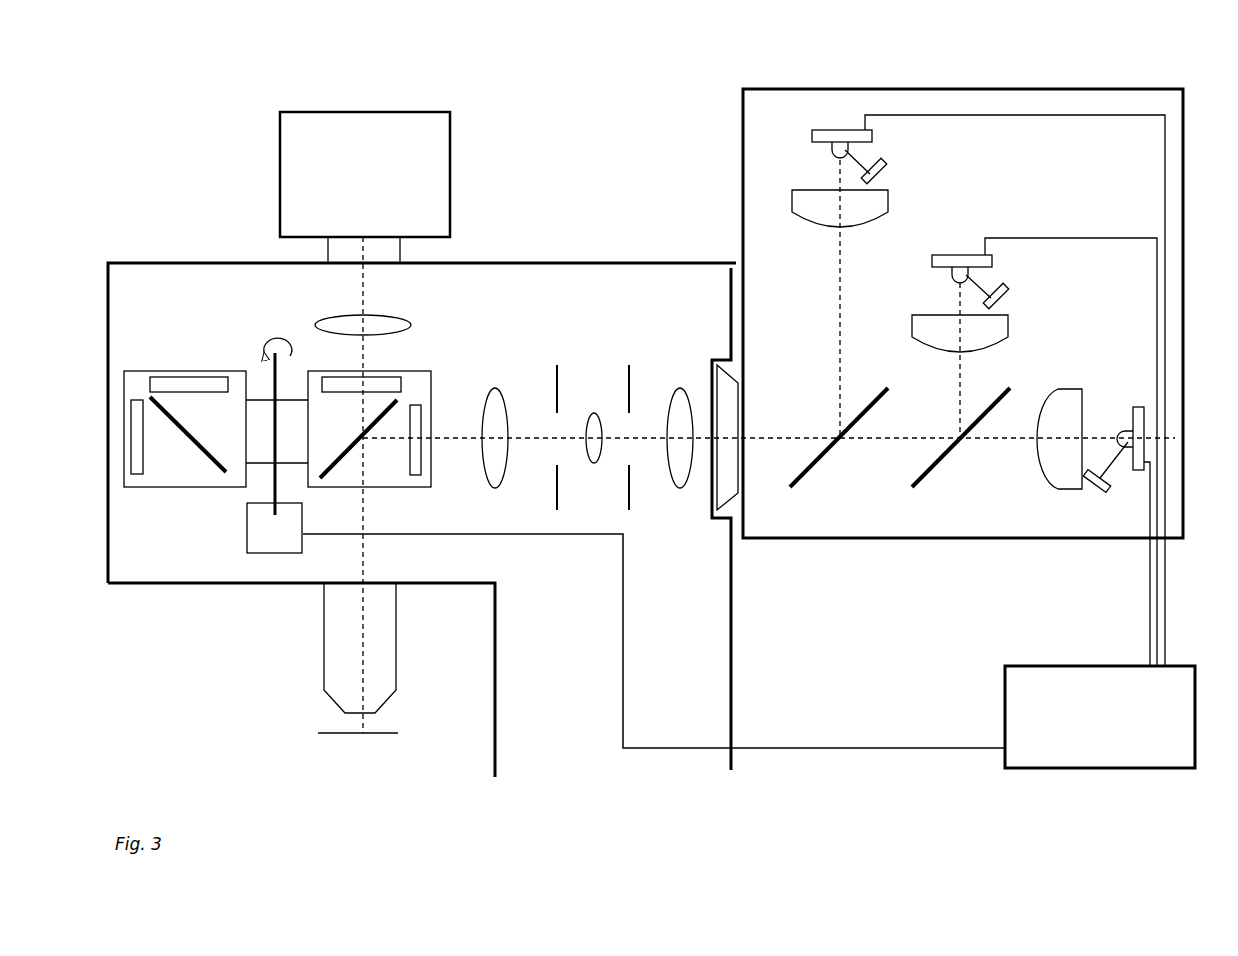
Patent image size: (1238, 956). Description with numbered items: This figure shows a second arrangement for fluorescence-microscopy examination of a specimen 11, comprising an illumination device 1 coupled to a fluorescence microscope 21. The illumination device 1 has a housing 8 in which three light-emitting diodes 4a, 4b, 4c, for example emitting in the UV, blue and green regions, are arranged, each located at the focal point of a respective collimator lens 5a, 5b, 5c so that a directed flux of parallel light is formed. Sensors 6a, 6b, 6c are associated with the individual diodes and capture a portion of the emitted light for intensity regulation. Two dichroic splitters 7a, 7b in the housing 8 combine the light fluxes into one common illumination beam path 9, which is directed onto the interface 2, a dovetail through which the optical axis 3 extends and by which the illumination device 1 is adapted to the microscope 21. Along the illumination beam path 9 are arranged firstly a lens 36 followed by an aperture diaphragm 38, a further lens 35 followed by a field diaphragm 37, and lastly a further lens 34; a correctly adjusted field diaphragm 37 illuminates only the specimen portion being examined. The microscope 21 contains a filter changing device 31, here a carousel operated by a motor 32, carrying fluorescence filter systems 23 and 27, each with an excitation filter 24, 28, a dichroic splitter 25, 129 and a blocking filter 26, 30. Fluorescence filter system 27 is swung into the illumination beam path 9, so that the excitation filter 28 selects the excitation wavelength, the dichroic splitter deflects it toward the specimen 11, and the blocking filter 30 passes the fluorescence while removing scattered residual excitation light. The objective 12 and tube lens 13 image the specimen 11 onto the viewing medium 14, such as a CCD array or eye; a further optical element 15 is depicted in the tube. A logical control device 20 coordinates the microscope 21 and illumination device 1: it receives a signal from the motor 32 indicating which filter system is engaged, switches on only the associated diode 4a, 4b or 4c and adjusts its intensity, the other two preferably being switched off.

The illumination device 1 is at (768, 84).
The interface 2 is at (750, 530).
The optical axis 3 is at (893, 440).
The light-emitting diode 4a is at (830, 130).
The light-emitting diode 4b is at (950, 255).
The light-emitting diode 4c is at (1138, 475).
The collimator lens 5a is at (880, 205).
The collimator lens 5b is at (1000, 328).
The collimator lens 5c is at (1065, 485).
The sensor 6a is at (880, 165).
The sensor 6b is at (1000, 290).
The sensor 6c is at (1105, 492).
The dichroic splitter 7a is at (800, 490).
The dichroic splitter 7b is at (922, 480).
The housing 8 is at (770, 88).
The illumination beam path 9 is at (526, 440).
The specimen 11 is at (340, 735).
The objective 12 is at (330, 635).
The tube lens 13 is at (327, 323).
The viewing medium 14 is at (298, 165).
The tube lens 15 is at (363, 307).
The logical control device 20 is at (1020, 722).
The fluorescence microscope 21 is at (106, 380).
The fluorescence filter system 23 is at (205, 460).
The excitation filter 24 is at (136, 457).
The dichroic splitter 25 is at (137, 488).
The blocking filter 26 is at (157, 385).
The fluorescence filter system 27 is at (403, 490).
The excitation filter 28 is at (417, 470).
The blocking filter 30 is at (392, 385).
The filter changing device 31 is at (235, 349).
The motor 32 is at (255, 548).
The lens 34 is at (493, 390).
The lens 35 is at (593, 415).
The lens 36 is at (683, 390).
The field diaphragm 37 is at (557, 368).
The aperture diaphragm 38 is at (630, 368).
The dichroic beam splitter 129 is at (347, 455).